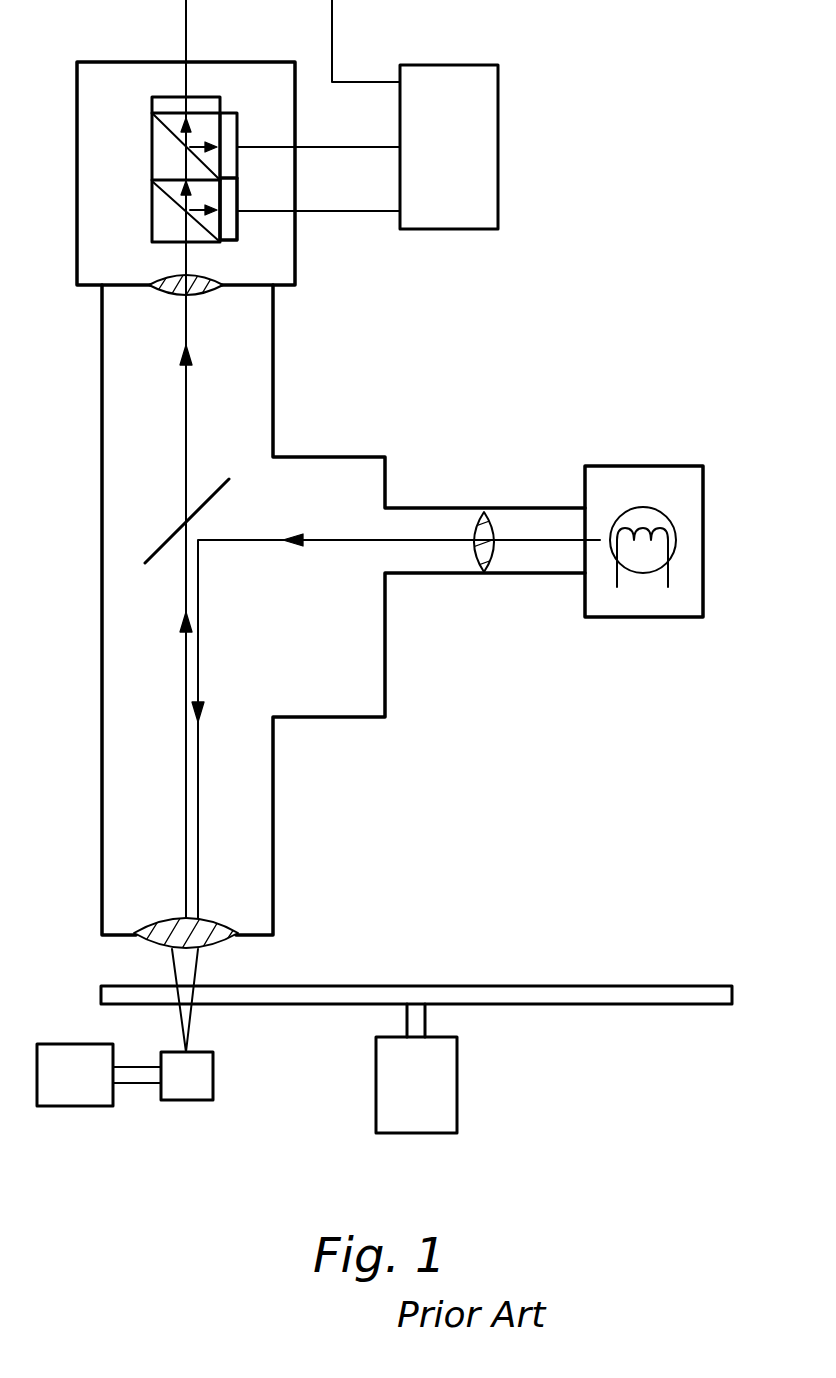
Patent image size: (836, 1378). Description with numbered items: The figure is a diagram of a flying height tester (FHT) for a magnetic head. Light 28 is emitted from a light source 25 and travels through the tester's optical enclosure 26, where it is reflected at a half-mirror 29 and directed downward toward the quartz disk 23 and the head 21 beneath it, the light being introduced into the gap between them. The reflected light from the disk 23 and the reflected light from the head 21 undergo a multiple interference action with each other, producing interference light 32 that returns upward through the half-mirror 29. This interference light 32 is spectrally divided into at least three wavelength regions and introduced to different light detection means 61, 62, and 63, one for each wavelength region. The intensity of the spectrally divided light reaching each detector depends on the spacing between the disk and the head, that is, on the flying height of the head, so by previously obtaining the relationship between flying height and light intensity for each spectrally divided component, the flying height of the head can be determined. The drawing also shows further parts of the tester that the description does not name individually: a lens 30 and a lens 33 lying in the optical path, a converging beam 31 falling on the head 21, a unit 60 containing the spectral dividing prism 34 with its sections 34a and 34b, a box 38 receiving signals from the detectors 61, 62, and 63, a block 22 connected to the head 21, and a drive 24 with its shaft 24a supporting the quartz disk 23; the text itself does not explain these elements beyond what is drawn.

The head 21 is at (213, 1094).
The signal processing circuit 22 is at (96, 1089).
The quartz disk 23 is at (525, 986).
The spindle motor 24 is at (439, 1098).
The spindle shaft 24a is at (425, 1015).
The light source 25 is at (676, 540).
The housing / light path 26 is at (273, 365).
The light 28 is at (200, 622).
The half-mirror 29 is at (160, 548).
The objective lens 30 is at (158, 920).
The converging light beam 31 is at (188, 1030).
The interference light 32 is at (186, 688).
The imaging lens 33 is at (152, 295).
The color separation prism 34 is at (137, 132).
The first dichroic prism 34a is at (185, 210).
The second dichroic prism 34b is at (185, 147).
The signal processing circuit 38 is at (471, 166).
The color camera unit 60 is at (138, 110).
The light detection means 61 is at (237, 223).
The light detection means 62 is at (237, 131).
The light detection means 63 is at (215, 97).